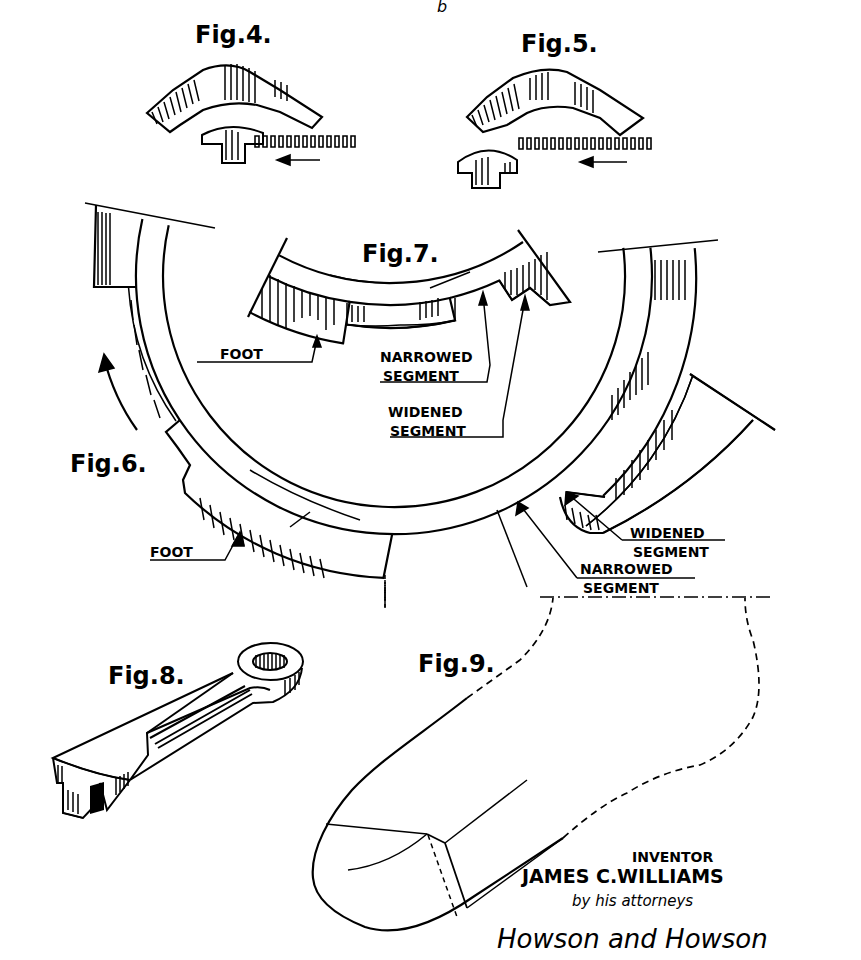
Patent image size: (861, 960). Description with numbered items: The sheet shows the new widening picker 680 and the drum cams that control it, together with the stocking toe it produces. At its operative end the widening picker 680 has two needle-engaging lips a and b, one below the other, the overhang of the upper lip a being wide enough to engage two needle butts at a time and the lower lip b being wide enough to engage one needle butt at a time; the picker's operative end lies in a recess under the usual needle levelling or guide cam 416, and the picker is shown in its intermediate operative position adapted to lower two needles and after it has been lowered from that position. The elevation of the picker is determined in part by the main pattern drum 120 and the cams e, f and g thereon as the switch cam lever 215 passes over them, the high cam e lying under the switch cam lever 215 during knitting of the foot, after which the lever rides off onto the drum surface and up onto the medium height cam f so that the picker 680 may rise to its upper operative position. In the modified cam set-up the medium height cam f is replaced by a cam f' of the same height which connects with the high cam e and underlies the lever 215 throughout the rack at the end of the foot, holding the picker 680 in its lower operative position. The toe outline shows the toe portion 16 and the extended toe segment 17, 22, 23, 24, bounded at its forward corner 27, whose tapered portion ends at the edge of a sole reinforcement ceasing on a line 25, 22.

In FIG. 4, the needle levelling or guide cam 416 is at (210, 80).
In FIG. 5, the needle levelling or guide cam 416 is at (528, 88).
In FIG. 4, the widening picker 680 is at (238, 163).
In FIG. 5, the widening picker 680 is at (480, 188).
In FIG. 8, the widening picker 680 is at (220, 718).
In FIG. 4, the upper needle-engaging lip a is at (218, 138).
In FIG. 5, the upper needle-engaging lip a is at (465, 160).
In FIG. 8, the upper needle-engaging lip a is at (97, 790).
In FIG. 4, the lower needle-engaging lip b is at (230, 156).
In FIG. 5, the lower needle-engaging lip b is at (475, 180).
In FIG. 8, the lower needle-engaging lip b is at (85, 806).
In FIG. 6, the main pattern drum 120 is at (250, 470).
In FIG. 6, the switch cam lever 215 is at (688, 473).
In FIG. 7, the high cam e is at (330, 302).
In FIG. 6, the high cam e is at (307, 514).
In FIG. 6, the medium height cam f is at (500, 538).
In FIG. 7, the cam f' is at (444, 293).
In FIG. 7, the cam g is at (524, 279).
In FIG. 6, the cam g is at (580, 471).
In FIG. 7, the toe segment corner 17 is at (372, 337).
In FIG. 6, the toe segment corner 17 is at (512, 566).
In FIG. 9, the toe segment corner 17 is at (434, 828).
In FIG. 7, the toe segment corner 22 is at (360, 397).
In FIG. 6, the toe segment corner 22 is at (420, 591).
In FIG. 9, the toe segment corner 22 is at (459, 872).
In FIG. 7, the toe segment corner 23 is at (360, 397).
In FIG. 6, the toe segment corner 23 is at (440, 592).
In FIG. 9, the toe segment corner 23 is at (515, 881).
In FIG. 7, the toe segment corner 24 is at (360, 397).
In FIG. 6, the toe segment corner 24 is at (480, 577).
In FIG. 9, the toe segment corner 24 is at (444, 888).
In FIG. 9, the sole reinforcement edge point 25 is at (497, 805).
In FIG. 9, the knitted course 27 is at (358, 824).
In FIG. 9, the toe portion 16 is at (377, 857).